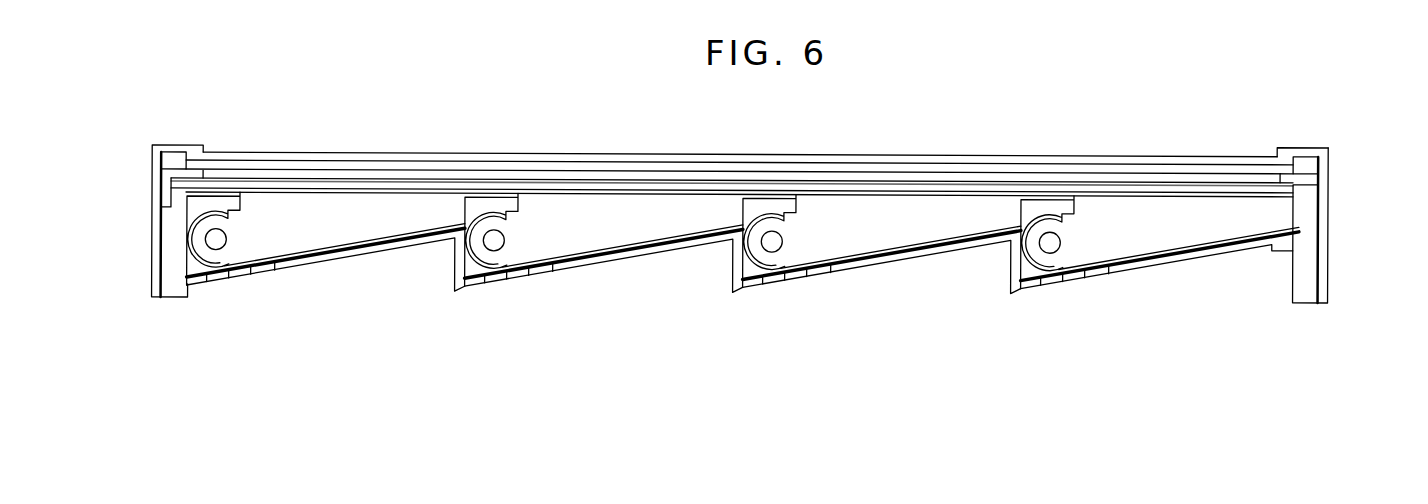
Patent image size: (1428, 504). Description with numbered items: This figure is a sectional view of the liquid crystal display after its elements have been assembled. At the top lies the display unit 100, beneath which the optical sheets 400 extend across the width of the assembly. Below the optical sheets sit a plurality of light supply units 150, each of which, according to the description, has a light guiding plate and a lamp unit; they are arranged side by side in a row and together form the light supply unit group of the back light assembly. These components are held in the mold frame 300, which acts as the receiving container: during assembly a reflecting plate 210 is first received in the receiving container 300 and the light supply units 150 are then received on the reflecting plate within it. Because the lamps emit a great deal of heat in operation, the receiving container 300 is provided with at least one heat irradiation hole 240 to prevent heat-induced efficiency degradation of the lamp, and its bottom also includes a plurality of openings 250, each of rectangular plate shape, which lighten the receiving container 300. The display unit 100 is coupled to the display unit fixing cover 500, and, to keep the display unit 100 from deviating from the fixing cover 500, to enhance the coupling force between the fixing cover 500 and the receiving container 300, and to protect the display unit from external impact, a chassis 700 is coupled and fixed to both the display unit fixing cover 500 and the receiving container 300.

The display unit 100 is at (895, 132).
The light supply unit 150 is at (258, 239).
The reflecting plate 210 is at (1019, 274).
The heat irradiation hole 240 is at (1043, 280).
The opening 250 is at (1173, 258).
The mold frame 300 is at (173, 287).
The optical sheets 400 is at (403, 181).
The display unit fixing cover 500 is at (1305, 177).
The chassis 700 is at (1325, 228).